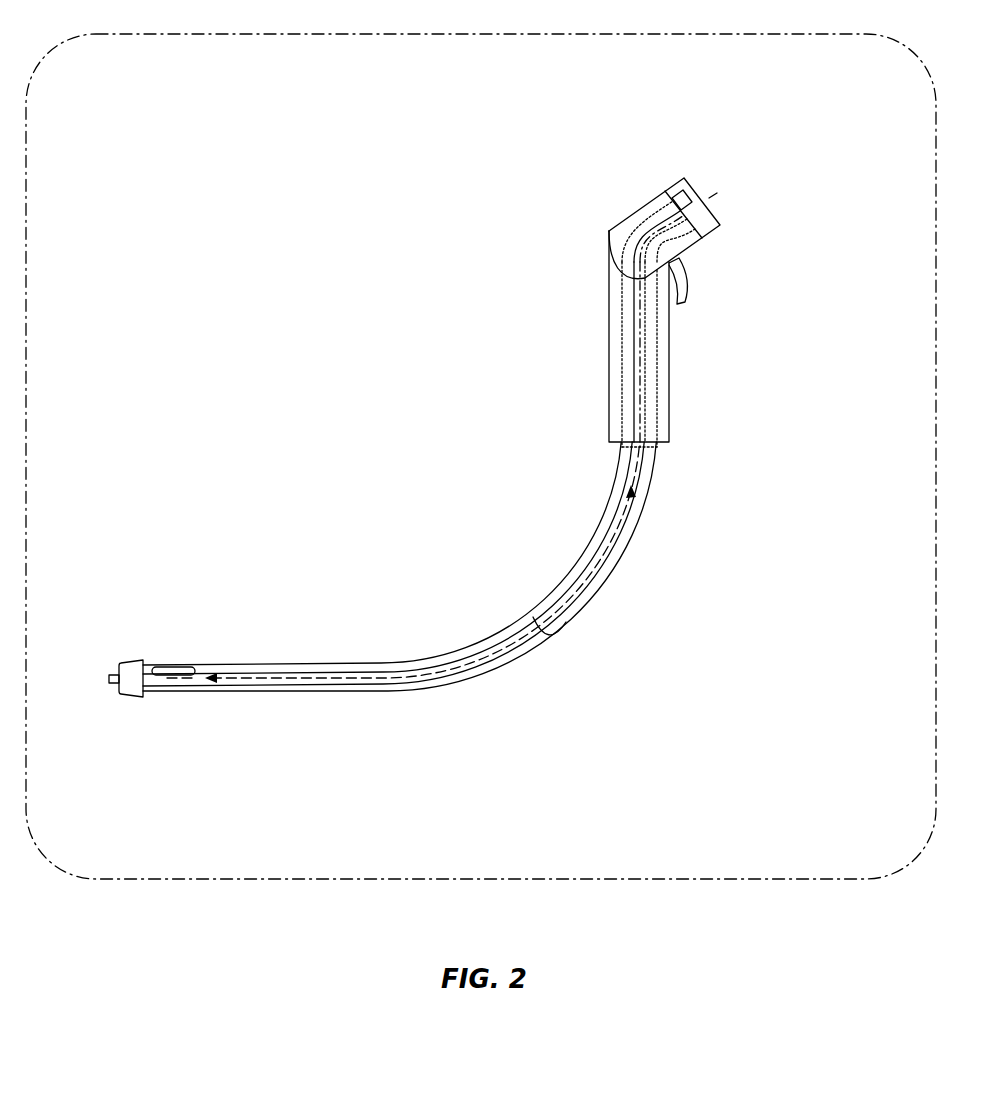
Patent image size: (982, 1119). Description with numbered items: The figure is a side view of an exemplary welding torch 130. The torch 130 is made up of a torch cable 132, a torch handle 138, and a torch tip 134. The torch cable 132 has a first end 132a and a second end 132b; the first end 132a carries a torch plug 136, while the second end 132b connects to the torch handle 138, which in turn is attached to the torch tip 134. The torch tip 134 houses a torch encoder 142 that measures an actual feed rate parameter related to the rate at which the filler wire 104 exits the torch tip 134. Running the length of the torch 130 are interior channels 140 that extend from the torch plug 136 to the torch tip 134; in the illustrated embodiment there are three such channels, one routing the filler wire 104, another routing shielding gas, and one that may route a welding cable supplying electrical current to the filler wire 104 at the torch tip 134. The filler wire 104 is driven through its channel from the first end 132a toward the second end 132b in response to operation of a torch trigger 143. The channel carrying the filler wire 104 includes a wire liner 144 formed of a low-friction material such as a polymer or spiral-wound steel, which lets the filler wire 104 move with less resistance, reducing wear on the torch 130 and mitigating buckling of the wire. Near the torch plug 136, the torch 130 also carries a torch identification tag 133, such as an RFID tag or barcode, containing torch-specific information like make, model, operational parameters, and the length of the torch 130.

The torch 130 is at (481, 444).
The torch cable 132 is at (400, 585).
The first end 132a is at (273, 679).
The second end 132b is at (620, 532).
The torch identification tag 133 is at (173, 655).
The torch tip 134 is at (709, 240).
The torch plug 136 is at (130, 706).
The torch handle 138 is at (600, 349).
The interior channels 140 is at (557, 637).
The torch encoder 142 is at (677, 183).
The torch trigger 143 is at (683, 314).
The wire liner 144 is at (596, 587).
The filler wire 104 is at (638, 390).